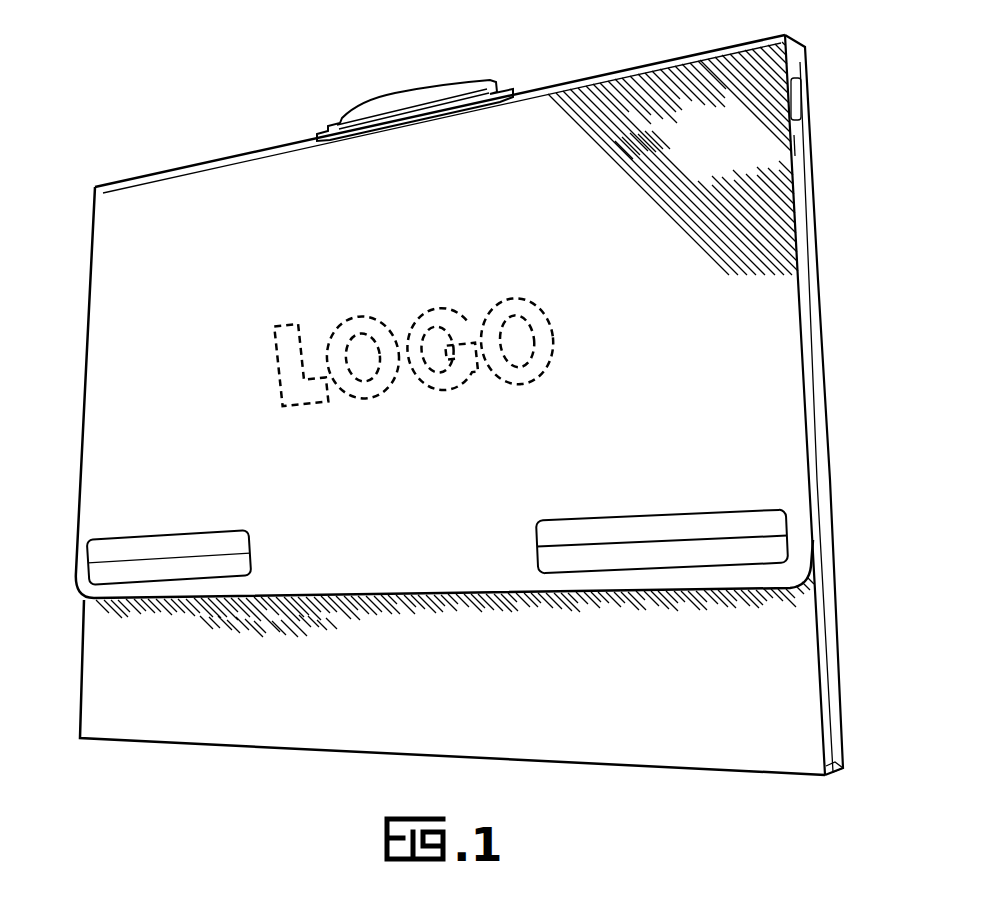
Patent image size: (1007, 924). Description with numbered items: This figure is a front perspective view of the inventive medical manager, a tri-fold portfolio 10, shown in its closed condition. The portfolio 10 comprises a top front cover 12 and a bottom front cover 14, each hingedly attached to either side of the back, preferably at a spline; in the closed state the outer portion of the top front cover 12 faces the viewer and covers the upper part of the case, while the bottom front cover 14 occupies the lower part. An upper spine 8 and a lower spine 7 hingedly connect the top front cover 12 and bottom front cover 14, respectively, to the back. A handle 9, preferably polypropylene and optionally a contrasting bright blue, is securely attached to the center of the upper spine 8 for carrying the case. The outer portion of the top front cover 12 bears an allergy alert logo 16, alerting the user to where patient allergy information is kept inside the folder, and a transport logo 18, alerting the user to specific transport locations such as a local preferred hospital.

The lower spine 7 is at (836, 769).
The upper spine 8 is at (801, 68).
The handle 9 is at (386, 104).
The tri-fold portfolio 10 is at (839, 255).
The top front cover 12 is at (724, 338).
The bottom front cover 14 is at (733, 704).
The allergy alert logo 16 is at (235, 524).
The transport logo 18 is at (570, 512).